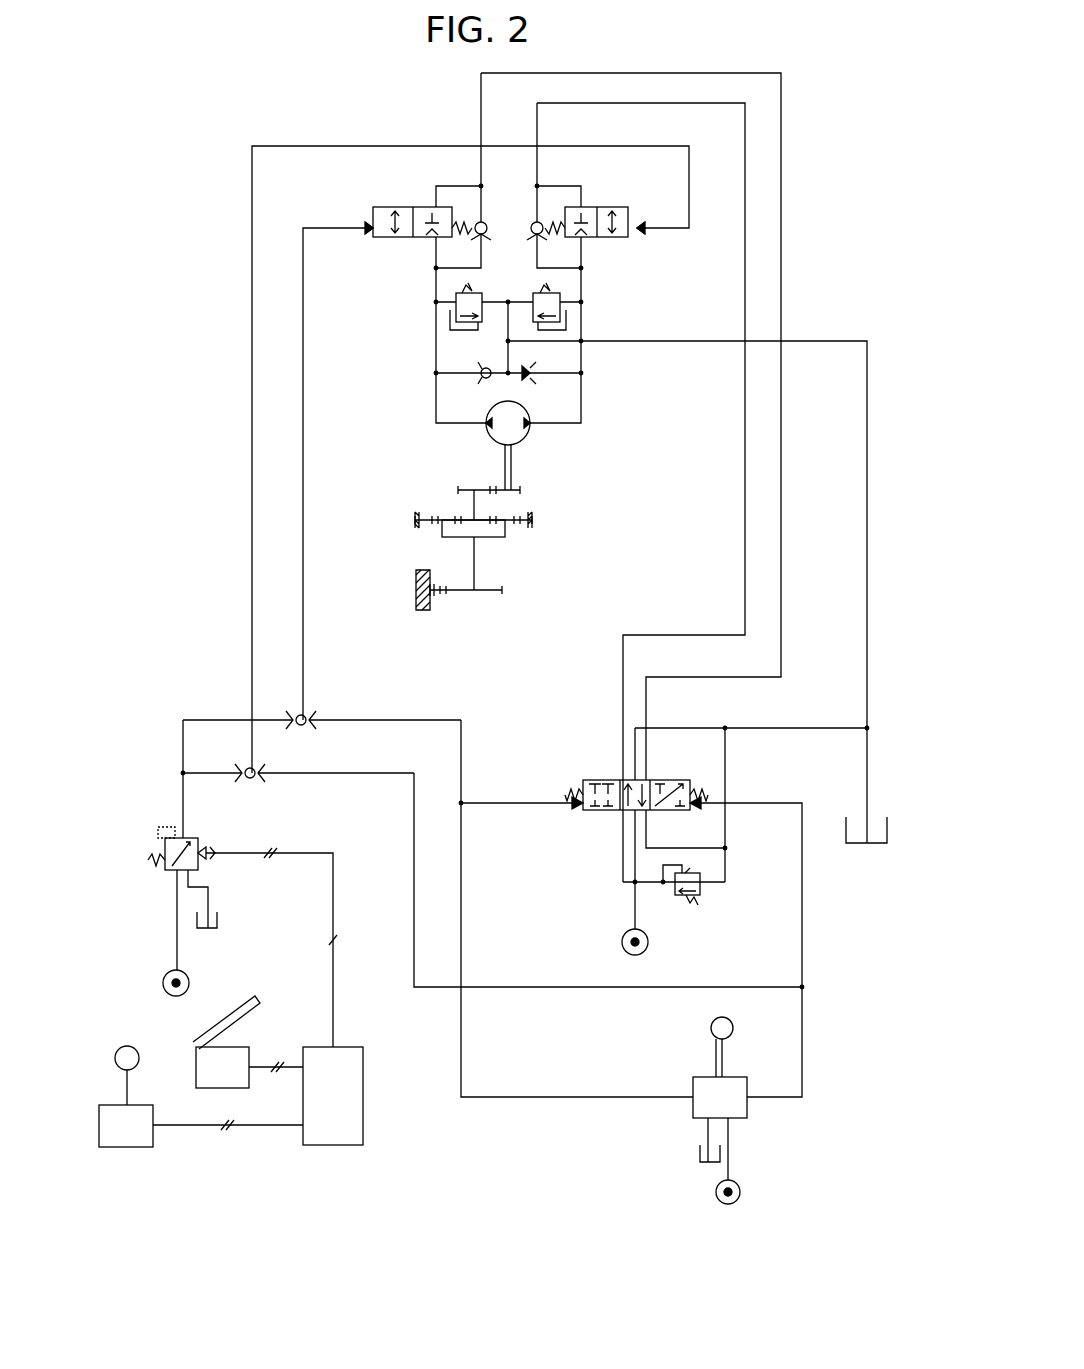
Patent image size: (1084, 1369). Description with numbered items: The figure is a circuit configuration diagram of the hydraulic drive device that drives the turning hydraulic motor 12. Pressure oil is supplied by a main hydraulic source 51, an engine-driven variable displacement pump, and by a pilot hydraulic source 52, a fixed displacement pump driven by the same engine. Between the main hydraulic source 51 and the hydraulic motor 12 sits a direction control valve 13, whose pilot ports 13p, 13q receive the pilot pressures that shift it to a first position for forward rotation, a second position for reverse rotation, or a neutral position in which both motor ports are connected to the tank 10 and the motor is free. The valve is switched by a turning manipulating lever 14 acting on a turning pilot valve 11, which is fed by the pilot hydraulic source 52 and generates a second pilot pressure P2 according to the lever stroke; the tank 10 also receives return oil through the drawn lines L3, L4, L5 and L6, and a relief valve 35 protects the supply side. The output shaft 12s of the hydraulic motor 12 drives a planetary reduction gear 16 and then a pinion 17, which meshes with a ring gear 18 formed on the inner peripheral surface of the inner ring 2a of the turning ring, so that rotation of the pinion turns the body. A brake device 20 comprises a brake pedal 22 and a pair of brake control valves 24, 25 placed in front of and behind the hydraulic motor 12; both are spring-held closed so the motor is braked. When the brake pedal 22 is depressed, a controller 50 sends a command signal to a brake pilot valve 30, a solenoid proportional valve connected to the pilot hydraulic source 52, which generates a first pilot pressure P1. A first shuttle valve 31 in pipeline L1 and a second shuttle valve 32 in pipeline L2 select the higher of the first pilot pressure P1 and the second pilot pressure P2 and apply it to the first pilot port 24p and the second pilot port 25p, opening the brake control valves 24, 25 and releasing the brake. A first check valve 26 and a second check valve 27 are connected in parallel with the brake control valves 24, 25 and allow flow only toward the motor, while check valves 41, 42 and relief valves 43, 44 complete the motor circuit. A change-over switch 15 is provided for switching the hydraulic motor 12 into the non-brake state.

The inner ring 2a is at (418, 590).
The tank 10 is at (217, 920).
The turning pilot valve 11 is at (693, 1110).
The hydraulic motor 12 is at (528, 437).
The output shaft 12s is at (505, 465).
The direction control valve 13 is at (592, 780).
The pilot port 13p is at (573, 803).
The pilot port 13q is at (700, 803).
The turning manipulating lever 14 is at (711, 1028).
The change-over switch 15 is at (115, 1056).
The planetary reduction gear 16 is at (505, 535).
The pinion 17 is at (492, 592).
The ring gear 18 is at (432, 597).
The brake device 20 is at (251, 1014).
The brake pedal 22 is at (238, 1005).
The first brake control valve 24 is at (395, 207).
The first pilot port 24p is at (373, 225).
The second brake control valve 25 is at (630, 207).
The second pilot port 25p is at (643, 228).
The first check valve 26 is at (481, 220).
The second check valve 27 is at (540, 225).
The brake pilot valve 30 is at (165, 852).
The first shuttle valve 31 is at (313, 724).
The second shuttle valve 32 is at (262, 780).
The relief valve 35 is at (702, 900).
The check valve 41 is at (488, 375).
The check valve 42 is at (530, 375).
The relief valve 43 is at (455, 307).
The relief valve 44 is at (560, 312).
The controller 50 is at (335, 1146).
The main hydraulic source 51 is at (620, 942).
The pilot hydraulic source 52 is at (163, 978).
The pipeline L1 is at (303, 462).
The pipeline L2 is at (252, 378).
The supply line L3 is at (562, 1097).
The pilot supply line L4 is at (562, 988).
The drain line L5 is at (745, 235).
The return line L6 is at (781, 180).
The first pilot pressure P1 is at (158, 816).
The second pilot pressure P2 is at (669, 1079).